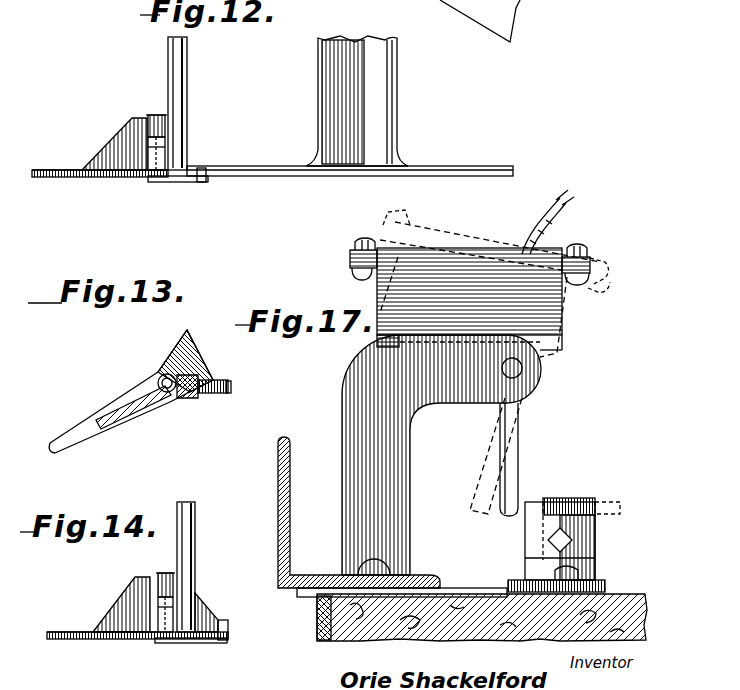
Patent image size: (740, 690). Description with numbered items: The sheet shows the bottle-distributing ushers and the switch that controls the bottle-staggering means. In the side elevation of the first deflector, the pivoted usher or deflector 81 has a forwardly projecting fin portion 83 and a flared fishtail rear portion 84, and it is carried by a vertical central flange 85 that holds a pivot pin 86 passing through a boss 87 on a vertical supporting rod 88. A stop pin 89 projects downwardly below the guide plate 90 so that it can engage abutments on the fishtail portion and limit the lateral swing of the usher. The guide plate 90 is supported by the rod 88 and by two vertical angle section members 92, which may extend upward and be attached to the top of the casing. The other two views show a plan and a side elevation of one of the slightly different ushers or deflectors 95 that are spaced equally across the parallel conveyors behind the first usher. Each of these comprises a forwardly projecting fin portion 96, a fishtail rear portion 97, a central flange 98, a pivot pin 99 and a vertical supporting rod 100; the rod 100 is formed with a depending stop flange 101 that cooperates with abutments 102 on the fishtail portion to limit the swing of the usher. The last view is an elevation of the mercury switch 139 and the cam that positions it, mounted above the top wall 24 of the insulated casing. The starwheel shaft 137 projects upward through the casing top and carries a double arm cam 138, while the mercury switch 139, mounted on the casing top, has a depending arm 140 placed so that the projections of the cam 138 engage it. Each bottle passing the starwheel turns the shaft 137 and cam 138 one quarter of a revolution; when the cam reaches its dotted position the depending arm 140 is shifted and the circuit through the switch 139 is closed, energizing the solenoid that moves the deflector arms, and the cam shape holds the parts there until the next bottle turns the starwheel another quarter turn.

In FIG. 12, the pivoted usher or deflector 81 is at (130, 178).
In FIG. 12, the forwardly projecting fin portion 83 is at (50, 170).
In FIG. 12, the flared fishtail rear portion 84 is at (190, 183).
In FIG. 12, the vertical central flange 85 is at (126, 140).
In FIG. 12, the pivot pin 86 is at (155, 115).
In FIG. 12, the boss 87 is at (160, 146).
In FIG. 12, the vertical supporting rod 88 is at (180, 75).
In FIG. 12, the stop pin 89 is at (203, 183).
In FIG. 12, the guide plate 90 is at (257, 166).
In FIG. 12, the vertical angle section members 92 is at (396, 98).
In FIG. 13, the usher or deflector 95 is at (154, 374).
In FIG. 14, the usher or deflector 95 is at (142, 641).
In FIG. 13, the forwardly projecting fin portion 96 is at (86, 420).
In FIG. 14, the forwardly projecting fin portion 96 is at (77, 631).
In FIG. 13, the fishtail rear portion 97 is at (190, 372).
In FIG. 14, the fishtail rear portion 97 is at (198, 644).
In FIG. 13, the central flange 98 is at (140, 417).
In FIG. 14, the central flange 98 is at (124, 602).
In FIG. 13, the pivot pin 99 is at (172, 396).
In FIG. 14, the pivot pin 99 is at (165, 573).
In FIG. 14, the vertical supporting rod 100 is at (186, 540).
In FIG. 13, the depending stop flange 101 is at (226, 382).
In FIG. 14, the depending stop flange 101 is at (222, 618).
In FIG. 13, the abutments 102 is at (190, 340).
In FIG. 14, the abutments 102 is at (223, 642).
In FIG. 17, the top wall 24 is at (612, 622).
In FIG. 17, the starwheel shaft 137 is at (578, 546).
In FIG. 17, the double arm cam 138 is at (582, 500).
In FIG. 17, the mercury switch 139 is at (540, 324).
In FIG. 17, the depending arm 140 is at (486, 462).